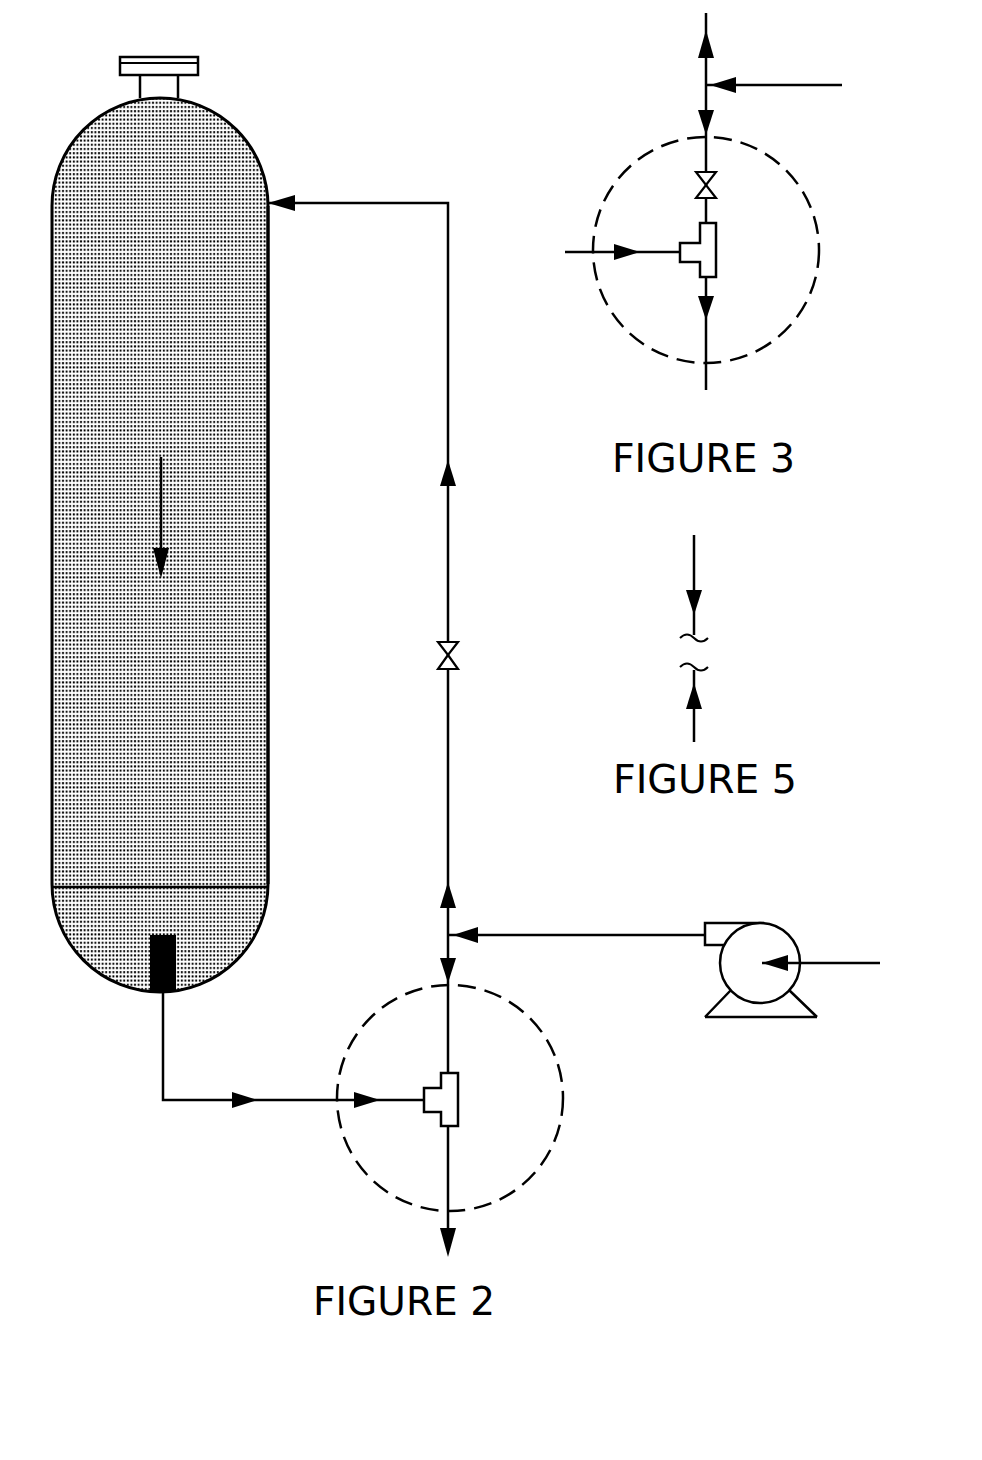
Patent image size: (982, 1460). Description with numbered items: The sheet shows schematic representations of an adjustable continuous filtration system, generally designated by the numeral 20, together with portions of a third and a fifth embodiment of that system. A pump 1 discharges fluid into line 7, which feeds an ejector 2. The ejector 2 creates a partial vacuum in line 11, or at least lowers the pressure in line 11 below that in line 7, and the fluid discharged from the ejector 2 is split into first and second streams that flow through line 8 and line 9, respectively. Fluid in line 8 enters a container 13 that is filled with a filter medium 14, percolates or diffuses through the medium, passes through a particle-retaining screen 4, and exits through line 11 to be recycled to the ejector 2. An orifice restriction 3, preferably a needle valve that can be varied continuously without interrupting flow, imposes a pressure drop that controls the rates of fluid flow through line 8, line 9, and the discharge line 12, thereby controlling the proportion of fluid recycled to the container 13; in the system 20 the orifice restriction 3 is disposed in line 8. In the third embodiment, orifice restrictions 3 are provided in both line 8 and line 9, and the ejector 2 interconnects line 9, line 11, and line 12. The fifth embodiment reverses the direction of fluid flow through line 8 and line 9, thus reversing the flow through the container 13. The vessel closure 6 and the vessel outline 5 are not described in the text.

In FIG. 2, the pump 1 is at (733, 922).
In FIG. 2, the ejector 2 is at (460, 1105).
In FIG. 3, the ejector 2 is at (718, 255).
In FIG. 2, the orifice restriction 3 is at (437, 655).
In FIG. 3, the orifice restriction 3 is at (696, 185).
In FIG. 2, the particle-retaining screen 4 is at (176, 975).
In FIG. 2, the vessel 5 is at (250, 950).
In FIG. 2, the inlet flange 6 is at (158, 57).
In FIG. 2, the line 7 is at (635, 932).
In FIG. 3, the line 7 is at (812, 85).
In FIG. 2, the line 8 is at (447, 520).
In FIG. 3, the line 8 is at (706, 70).
In FIG. 5, the line 8 is at (694, 565).
In FIG. 2, the line 9 is at (448, 1043).
In FIG. 3, the line 9 is at (706, 154).
In FIG. 5, the line 9 is at (694, 713).
In FIG. 2, the line 11 is at (410, 1100).
In FIG. 3, the line 11 is at (667, 252).
In FIG. 2, the line 12 is at (450, 1155).
In FIG. 3, the line 12 is at (708, 318).
In FIG. 2, the container 13 is at (268, 265).
In FIG. 2, the filter medium 14 is at (248, 352).
In FIG. 2, the filtration system 20 is at (343, 120).